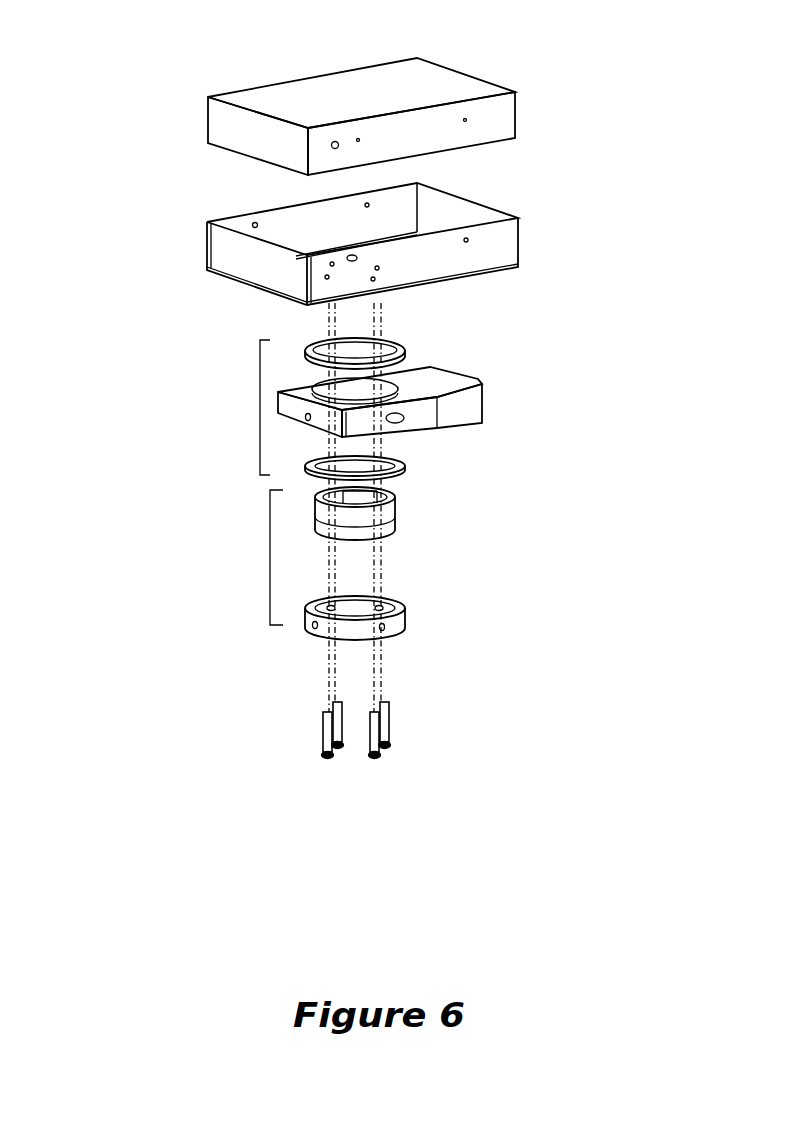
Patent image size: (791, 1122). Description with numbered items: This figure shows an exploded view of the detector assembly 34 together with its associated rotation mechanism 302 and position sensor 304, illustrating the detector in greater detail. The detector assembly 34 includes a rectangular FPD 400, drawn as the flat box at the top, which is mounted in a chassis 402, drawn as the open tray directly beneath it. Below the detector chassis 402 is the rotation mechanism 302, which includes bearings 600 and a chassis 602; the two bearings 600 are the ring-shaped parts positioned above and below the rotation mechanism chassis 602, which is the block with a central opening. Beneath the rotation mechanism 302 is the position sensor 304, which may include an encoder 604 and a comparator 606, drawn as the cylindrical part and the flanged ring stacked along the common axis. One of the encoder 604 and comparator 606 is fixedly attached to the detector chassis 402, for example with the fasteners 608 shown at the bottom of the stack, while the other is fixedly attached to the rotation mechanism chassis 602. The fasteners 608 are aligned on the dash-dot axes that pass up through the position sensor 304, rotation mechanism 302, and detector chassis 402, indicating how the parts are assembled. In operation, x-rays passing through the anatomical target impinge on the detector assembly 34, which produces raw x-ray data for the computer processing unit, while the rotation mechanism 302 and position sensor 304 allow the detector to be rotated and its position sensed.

The detector assembly 34 is at (188, 147).
The rectangular FPD 400 is at (342, 82).
The chassis 402 is at (220, 257).
The rotation mechanism 302 is at (260, 408).
The position sensor 304 is at (270, 558).
The bearings 600 is at (400, 344).
The chassis 602 is at (450, 378).
The encoder 604 is at (397, 505).
The comparator 606 is at (400, 610).
The fasteners 608 is at (387, 718).